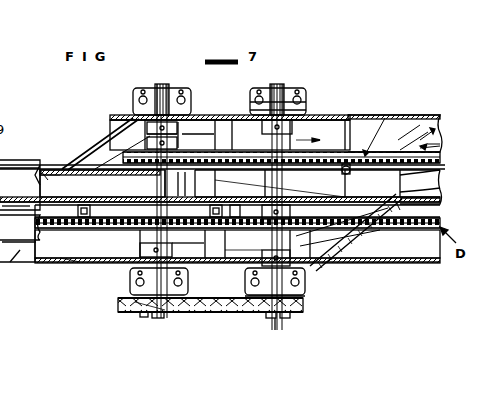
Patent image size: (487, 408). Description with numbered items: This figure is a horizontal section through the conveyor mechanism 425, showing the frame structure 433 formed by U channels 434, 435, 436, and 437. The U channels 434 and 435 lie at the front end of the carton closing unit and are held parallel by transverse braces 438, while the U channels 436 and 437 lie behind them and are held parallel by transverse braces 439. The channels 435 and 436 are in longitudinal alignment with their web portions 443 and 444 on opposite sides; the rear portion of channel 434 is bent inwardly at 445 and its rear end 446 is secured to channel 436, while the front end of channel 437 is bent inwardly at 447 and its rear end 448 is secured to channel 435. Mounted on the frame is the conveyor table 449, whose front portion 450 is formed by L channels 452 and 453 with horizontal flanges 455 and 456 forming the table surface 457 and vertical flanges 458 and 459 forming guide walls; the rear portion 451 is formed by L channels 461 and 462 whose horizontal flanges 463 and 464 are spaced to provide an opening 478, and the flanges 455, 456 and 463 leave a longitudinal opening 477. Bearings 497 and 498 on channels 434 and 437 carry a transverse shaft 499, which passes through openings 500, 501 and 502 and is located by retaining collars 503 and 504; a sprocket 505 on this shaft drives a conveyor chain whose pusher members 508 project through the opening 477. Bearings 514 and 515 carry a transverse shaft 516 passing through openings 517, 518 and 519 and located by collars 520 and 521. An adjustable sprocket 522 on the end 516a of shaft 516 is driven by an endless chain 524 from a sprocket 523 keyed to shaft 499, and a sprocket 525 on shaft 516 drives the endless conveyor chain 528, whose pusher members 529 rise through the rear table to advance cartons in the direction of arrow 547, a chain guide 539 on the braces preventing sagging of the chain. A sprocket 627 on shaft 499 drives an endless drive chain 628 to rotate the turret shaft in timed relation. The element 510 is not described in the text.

The frame structure 433 is at (322, 117).
The U channel 434 is at (204, 118).
The opening 500 is at (196, 135).
The opening 517 is at (264, 130).
The slide 510 is at (306, 133).
The bearing 497 is at (157, 100).
The inwardly bent rear portion 445 is at (136, 117).
The retaining collar 503 is at (146, 131).
The web portion 444 is at (148, 141).
The sprocket 505 is at (148, 137).
The transverse shaft 516 is at (276, 89).
The transverse brace 438 is at (252, 112).
The bearing 514 is at (290, 101).
The retaining collar 520 is at (298, 117).
The opening 501 is at (153, 172).
The pusher member 508 is at (345, 175).
The vertical flange 458 is at (384, 116).
The conveyor mechanism 425 is at (388, 122).
The L channel 452 is at (410, 127).
The conveyor table 449 is at (430, 128).
The opening 477 is at (404, 139).
The front portion 450 is at (430, 140).
The horizontal flange 455 is at (441, 146).
The table surface 457 is at (436, 160).
The pusher member 529 is at (102, 183).
The endless drive chain 628 is at (180, 183).
The opening 518 is at (317, 183).
The vertical flange 459 is at (220, 189).
The L channel 453 is at (422, 186).
The horizontal flange 456 is at (420, 192).
The rear end 448 is at (402, 202).
The horizontal flange 463 is at (20, 185).
The arrow 547 is at (16, 198).
The horizontal flange 464 is at (20, 228).
The L channel 461 is at (44, 172).
The U channel 436 is at (64, 170).
The rear end 446 is at (75, 165).
The opening 478 is at (24, 213).
The chain guide 539 is at (101, 209).
The sprocket 627 is at (205, 211).
The transverse brace 439 is at (244, 208).
The sprocket 525 is at (290, 211).
The L channel 462 is at (237, 240).
The retaining collar 504 is at (140, 249).
The opening 502 is at (188, 250).
The opening 519 is at (260, 268).
The retaining collar 521 is at (292, 258).
The rear portion 451 is at (24, 262).
The U channel 437 is at (80, 262).
The bearing 498 is at (155, 282).
The inwardly bent front end 447 is at (296, 268).
The bearing 515 is at (306, 290).
The endless chain 524 is at (222, 312).
The transverse shaft 499 is at (158, 318).
The sprocket 523 is at (148, 310).
The adjustable sprocket 522 is at (304, 310).
The end of shaft 516a is at (276, 328).
The U channel 435 is at (360, 232).
The web portion 443 is at (322, 230).
The endless conveyor chain 528 is at (324, 240).